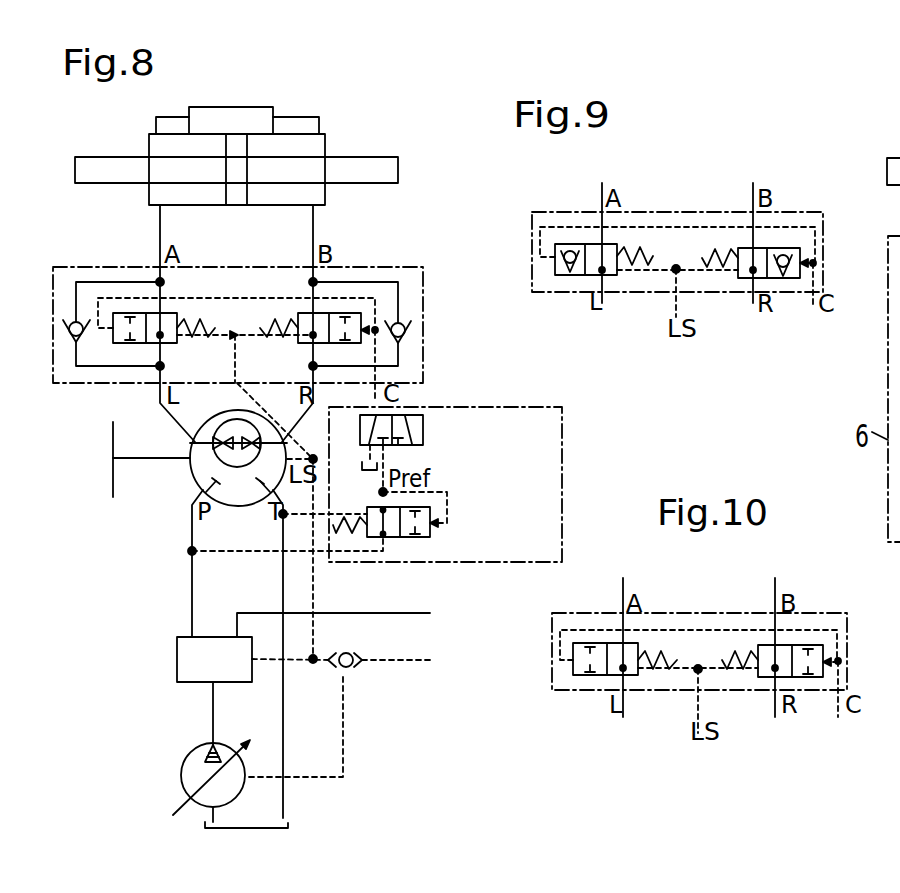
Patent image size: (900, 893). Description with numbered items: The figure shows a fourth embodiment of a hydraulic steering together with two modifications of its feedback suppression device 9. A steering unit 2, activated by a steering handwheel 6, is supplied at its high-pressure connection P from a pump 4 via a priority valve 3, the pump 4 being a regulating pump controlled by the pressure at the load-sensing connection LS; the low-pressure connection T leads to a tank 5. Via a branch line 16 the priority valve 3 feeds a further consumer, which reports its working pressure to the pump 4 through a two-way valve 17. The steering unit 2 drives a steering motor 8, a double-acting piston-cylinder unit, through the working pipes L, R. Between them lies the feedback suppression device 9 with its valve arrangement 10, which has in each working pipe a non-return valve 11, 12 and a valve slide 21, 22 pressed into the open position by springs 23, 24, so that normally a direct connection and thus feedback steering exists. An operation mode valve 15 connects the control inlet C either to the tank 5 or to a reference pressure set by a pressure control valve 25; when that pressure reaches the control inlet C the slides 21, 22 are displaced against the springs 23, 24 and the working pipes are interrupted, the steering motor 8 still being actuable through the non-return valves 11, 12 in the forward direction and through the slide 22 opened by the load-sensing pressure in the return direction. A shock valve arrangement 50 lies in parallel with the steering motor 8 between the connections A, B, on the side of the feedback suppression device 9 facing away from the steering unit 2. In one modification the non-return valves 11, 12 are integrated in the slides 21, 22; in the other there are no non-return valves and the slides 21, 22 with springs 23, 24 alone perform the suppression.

In FIG. 8, the steering unit 2 is at (195, 475).
In FIG. 8, the priority valve 3 is at (182, 668).
In FIG. 8, the pump 4 is at (188, 780).
In FIG. 8, the tank 5 is at (365, 470).
In FIG. 8, the steering handwheel 6 is at (112, 432).
In FIG. 8, the steering motor 8 is at (236, 133).
In FIG. 8, the feedback suppression device 9 is at (232, 300).
In FIG. 8, the valve arrangement 10 is at (403, 267).
In FIG. 9, the valve arrangement 10 is at (815, 213).
In FIG. 10, the valve arrangement 10 is at (830, 613).
In FIG. 8, the non-return valve 11 is at (72, 345).
In FIG. 9, the non-return valve 11 is at (558, 275).
In FIG. 8, the non-return valve 12 is at (392, 322).
In FIG. 9, the non-return valve 12 is at (797, 257).
In FIG. 8, the operation mode valve 15 is at (433, 430).
In FIG. 8, the branch line 16 is at (395, 615).
In FIG. 8, the two-way valve 17 is at (353, 668).
In FIG. 8, the valve slide 21 is at (170, 313).
In FIG. 9, the valve slide 21 is at (610, 275).
In FIG. 10, the valve slide 21 is at (633, 643).
In FIG. 8, the valve slide 22 is at (305, 313).
In FIG. 9, the valve slide 22 is at (742, 278).
In FIG. 10, the valve slide 22 is at (767, 645).
In FIG. 8, the spring 23 is at (203, 317).
In FIG. 9, the spring 23 is at (640, 247).
In FIG. 10, the spring 23 is at (675, 648).
In FIG. 8, the spring 24 is at (270, 315).
In FIG. 9, the spring 24 is at (703, 257).
In FIG. 10, the spring 24 is at (740, 670).
In FIG. 8, the pressure control valve 25 is at (437, 541).
In FIG. 8, the shock valve arrangement 50 is at (246, 117).